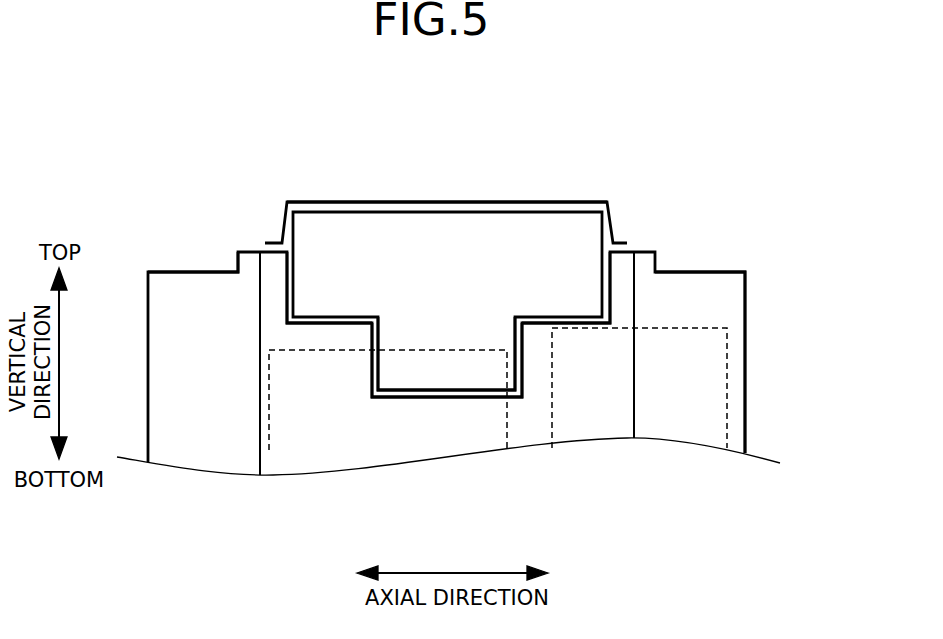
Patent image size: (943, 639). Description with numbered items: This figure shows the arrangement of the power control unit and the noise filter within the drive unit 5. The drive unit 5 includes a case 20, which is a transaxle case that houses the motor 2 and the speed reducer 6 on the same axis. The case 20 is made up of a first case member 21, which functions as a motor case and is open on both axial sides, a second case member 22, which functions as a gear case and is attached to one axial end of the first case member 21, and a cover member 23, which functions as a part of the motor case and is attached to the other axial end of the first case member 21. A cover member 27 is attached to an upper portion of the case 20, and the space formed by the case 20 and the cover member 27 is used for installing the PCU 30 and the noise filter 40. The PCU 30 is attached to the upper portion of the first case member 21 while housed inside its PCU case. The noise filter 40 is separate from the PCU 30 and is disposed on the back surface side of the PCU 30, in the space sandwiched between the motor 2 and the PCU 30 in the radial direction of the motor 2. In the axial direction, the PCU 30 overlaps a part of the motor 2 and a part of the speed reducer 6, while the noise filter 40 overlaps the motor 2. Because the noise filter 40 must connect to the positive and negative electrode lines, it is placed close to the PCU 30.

The drive unit 5 is at (520, 115).
The case 20 is at (748, 303).
The first case member 21 is at (630, 250).
The second case member 22 is at (728, 272).
The cover member 23 is at (177, 272).
The cover member 27 is at (558, 203).
The power control unit (PCU) 30 is at (348, 212).
The noise filter 40 is at (445, 325).
The speed reducer 6 is at (727, 364).
The motor 2 is at (268, 400).